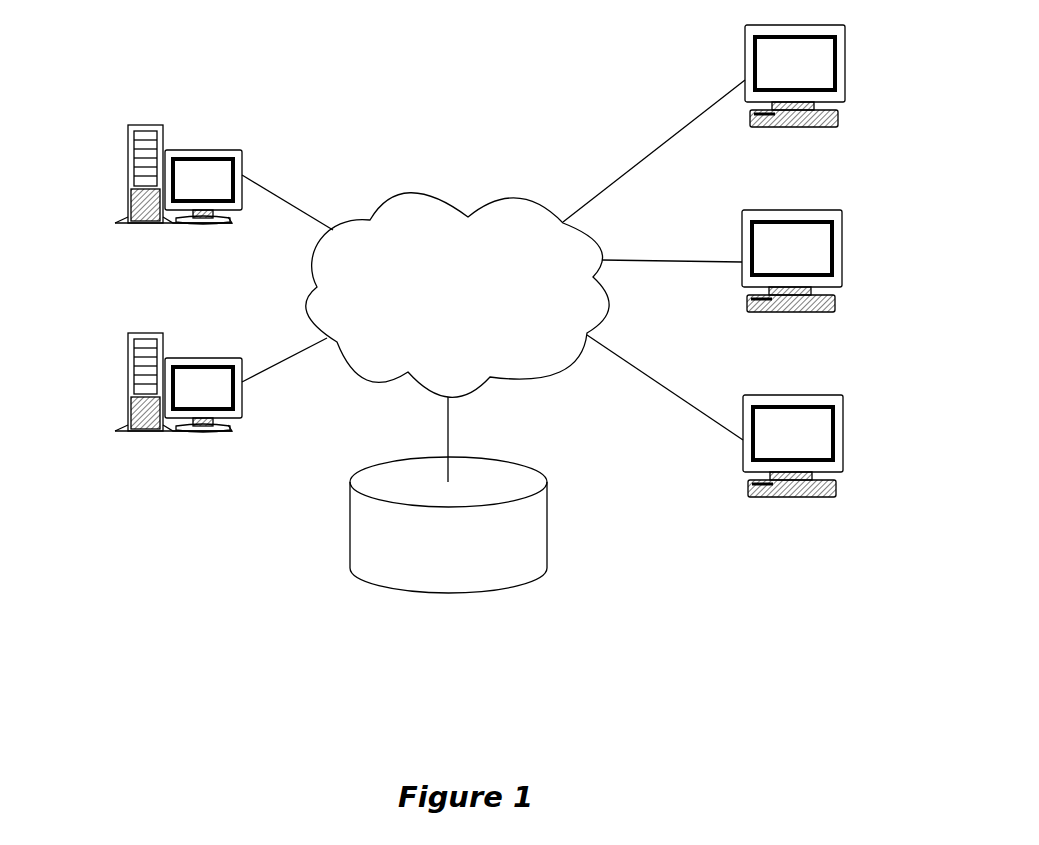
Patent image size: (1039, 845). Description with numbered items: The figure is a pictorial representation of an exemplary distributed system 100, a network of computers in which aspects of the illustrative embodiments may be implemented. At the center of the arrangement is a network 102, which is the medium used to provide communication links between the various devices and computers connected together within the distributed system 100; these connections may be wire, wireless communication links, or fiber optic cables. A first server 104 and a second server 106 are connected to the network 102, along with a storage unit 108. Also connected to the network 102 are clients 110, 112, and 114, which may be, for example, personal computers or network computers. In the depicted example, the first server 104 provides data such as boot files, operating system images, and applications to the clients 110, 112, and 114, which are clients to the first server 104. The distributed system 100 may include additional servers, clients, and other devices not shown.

The distributed system 100 is at (566, 76).
The network 102 is at (432, 195).
The first server 104 is at (128, 172).
The second server 106 is at (128, 383).
The storage unit 108 is at (350, 522).
The client 110 is at (845, 78).
The client 112 is at (842, 262).
The client 114 is at (843, 445).